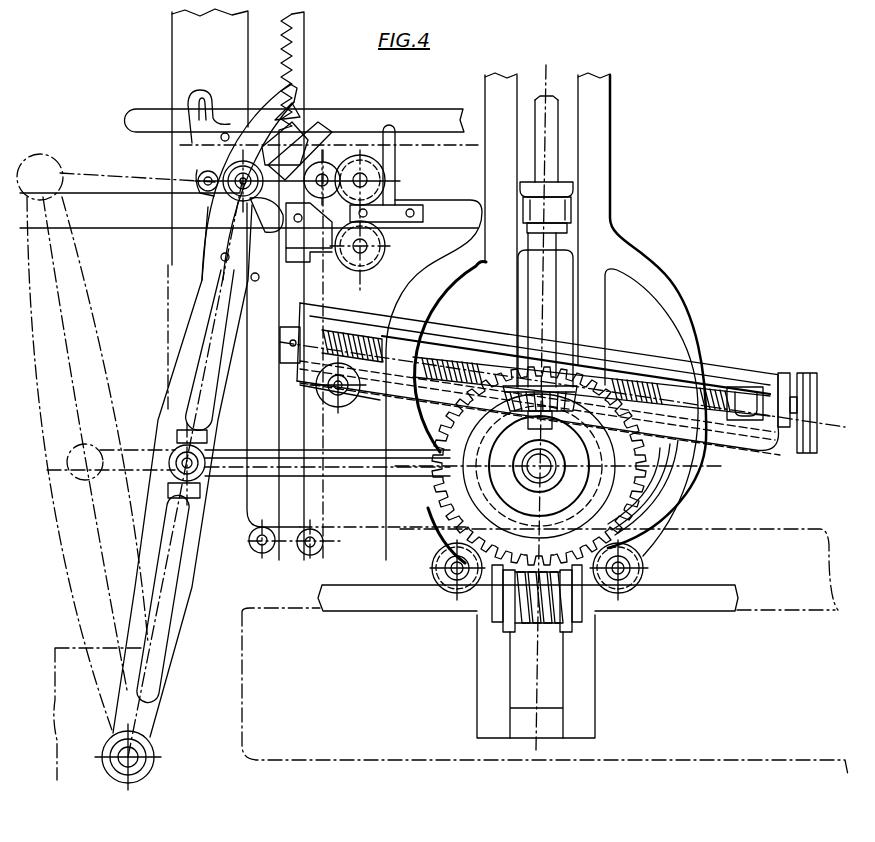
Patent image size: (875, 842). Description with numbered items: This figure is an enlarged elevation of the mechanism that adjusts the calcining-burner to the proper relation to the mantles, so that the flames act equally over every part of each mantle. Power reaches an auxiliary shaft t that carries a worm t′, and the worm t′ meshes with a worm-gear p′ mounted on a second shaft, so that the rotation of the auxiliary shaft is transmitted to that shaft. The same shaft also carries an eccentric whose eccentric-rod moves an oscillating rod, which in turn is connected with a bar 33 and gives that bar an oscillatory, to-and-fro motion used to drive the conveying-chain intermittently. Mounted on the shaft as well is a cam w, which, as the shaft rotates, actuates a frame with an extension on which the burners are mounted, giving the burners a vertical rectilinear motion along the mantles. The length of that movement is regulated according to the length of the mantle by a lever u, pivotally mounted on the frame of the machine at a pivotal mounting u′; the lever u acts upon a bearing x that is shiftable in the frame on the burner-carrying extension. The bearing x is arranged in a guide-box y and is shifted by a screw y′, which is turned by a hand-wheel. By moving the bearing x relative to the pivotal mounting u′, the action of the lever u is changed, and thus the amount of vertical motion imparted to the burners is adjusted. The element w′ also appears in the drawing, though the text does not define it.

The bar 33 is at (441, 207).
The gear wheel w′ is at (623, 362).
The cam w is at (645, 508).
The lever u is at (727, 443).
The pivotal mounting u′ is at (340, 390).
The guide-box y is at (733, 388).
The screw y′ is at (715, 380).
The bearing x is at (760, 393).
The auxiliary shaft t is at (663, 600).
The worm t′ is at (537, 625).
The worm-gear p′ is at (662, 546).